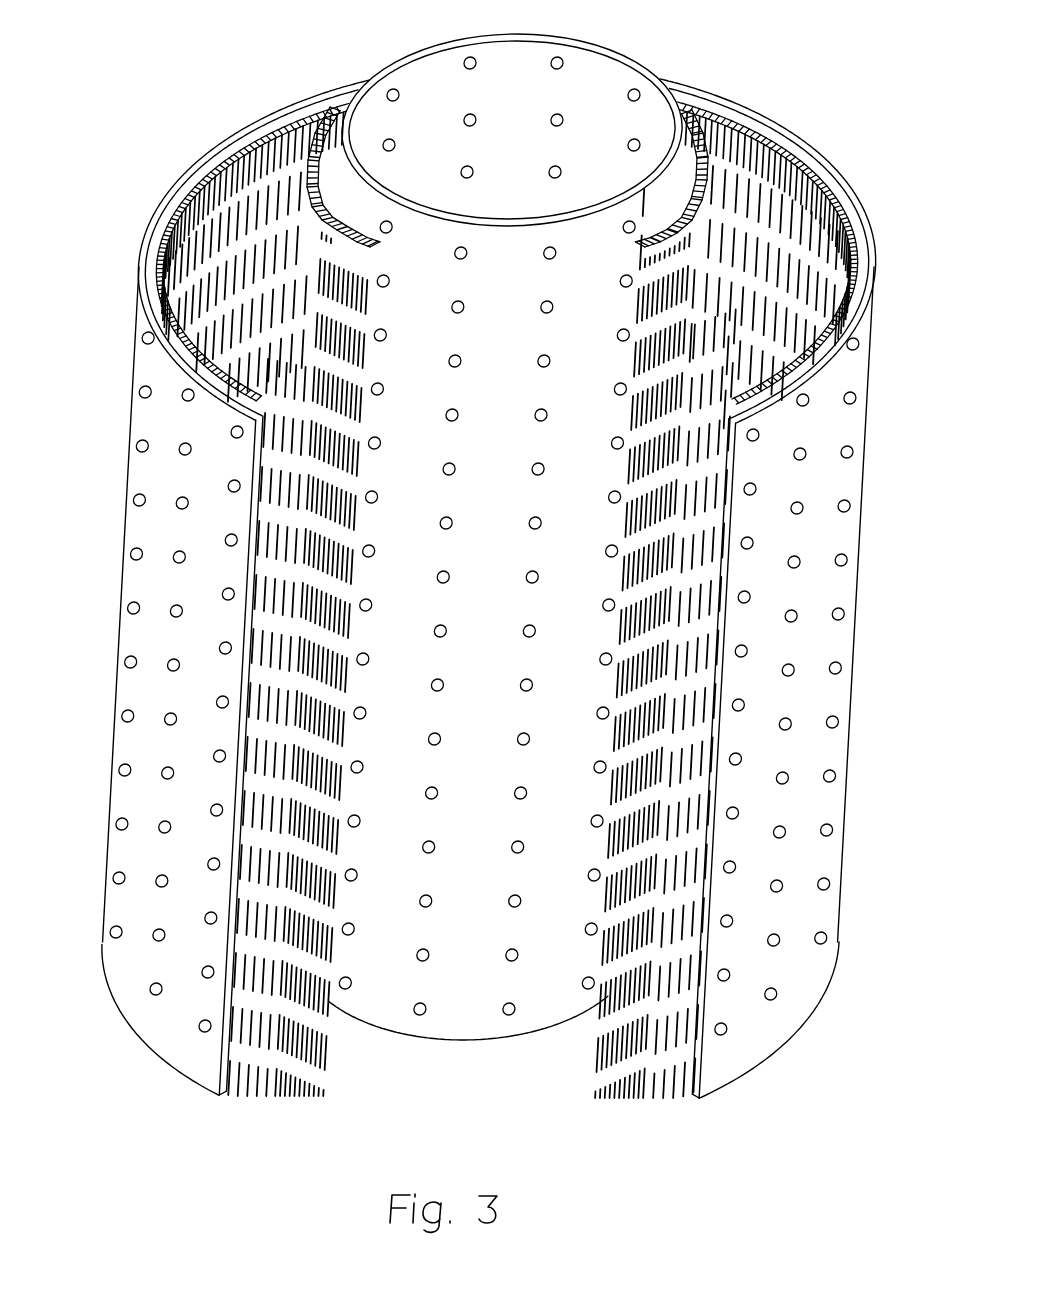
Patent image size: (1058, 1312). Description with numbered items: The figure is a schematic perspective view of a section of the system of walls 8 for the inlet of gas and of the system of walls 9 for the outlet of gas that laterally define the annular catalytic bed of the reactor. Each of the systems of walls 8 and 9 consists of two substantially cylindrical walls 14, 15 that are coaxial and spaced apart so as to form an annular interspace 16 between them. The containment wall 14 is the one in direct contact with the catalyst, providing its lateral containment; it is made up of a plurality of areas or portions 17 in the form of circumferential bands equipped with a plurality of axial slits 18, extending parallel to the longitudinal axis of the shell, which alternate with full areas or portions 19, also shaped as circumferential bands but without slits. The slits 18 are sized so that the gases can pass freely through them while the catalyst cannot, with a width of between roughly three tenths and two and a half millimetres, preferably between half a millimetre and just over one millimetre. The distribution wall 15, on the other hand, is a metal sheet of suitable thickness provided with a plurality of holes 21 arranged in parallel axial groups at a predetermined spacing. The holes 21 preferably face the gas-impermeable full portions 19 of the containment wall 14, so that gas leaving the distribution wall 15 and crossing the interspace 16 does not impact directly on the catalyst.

The system of walls for the gas inlet 8 is at (880, 212).
The system of walls for the gas outlet 9 is at (629, 40).
The containment wall 14 is at (262, 135).
The distribution wall 15 is at (205, 148).
The annular interspace 16 is at (180, 203).
The slitted areas or portions 17 is at (374, 360).
The axial slits 18 is at (256, 1086).
The full areas or portions 19 is at (371, 329).
The holes 21 is at (135, 496).